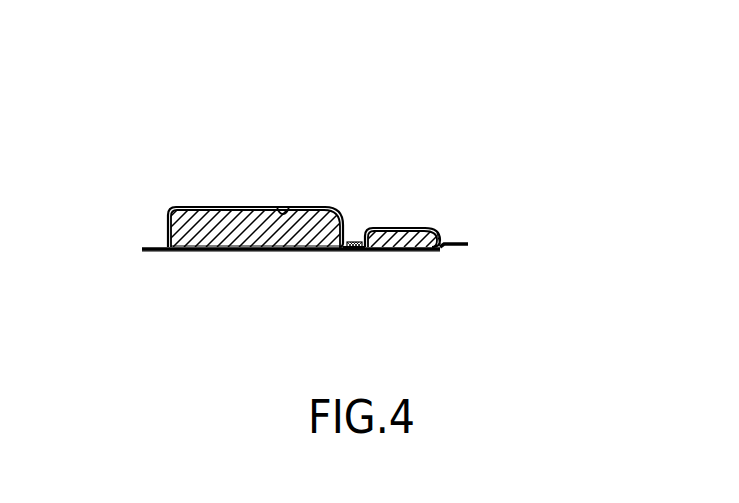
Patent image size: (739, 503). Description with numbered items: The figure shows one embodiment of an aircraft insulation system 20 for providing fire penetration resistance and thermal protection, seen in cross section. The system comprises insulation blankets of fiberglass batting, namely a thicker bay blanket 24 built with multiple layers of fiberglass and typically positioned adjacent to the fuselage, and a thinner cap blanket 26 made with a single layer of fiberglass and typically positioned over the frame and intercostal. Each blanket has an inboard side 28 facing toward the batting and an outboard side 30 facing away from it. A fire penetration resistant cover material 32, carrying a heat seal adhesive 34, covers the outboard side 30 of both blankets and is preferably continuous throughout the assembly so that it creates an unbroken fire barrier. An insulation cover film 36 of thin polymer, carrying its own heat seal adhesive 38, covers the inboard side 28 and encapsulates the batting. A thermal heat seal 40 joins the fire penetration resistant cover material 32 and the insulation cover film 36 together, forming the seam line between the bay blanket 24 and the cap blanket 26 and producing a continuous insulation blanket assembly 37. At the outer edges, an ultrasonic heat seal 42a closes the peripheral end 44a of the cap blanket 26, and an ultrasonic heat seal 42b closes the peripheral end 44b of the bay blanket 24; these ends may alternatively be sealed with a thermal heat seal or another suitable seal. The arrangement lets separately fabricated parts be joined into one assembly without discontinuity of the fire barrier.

The aircraft insulation system 20 is at (518, 94).
The bay blanket 24 is at (203, 216).
The cap blanket 26 is at (440, 229).
The inboard side 28 is at (283, 210).
The outboard side 30 is at (308, 252).
The fire penetration resistant cover material 32 is at (222, 251).
The heat seal adhesive 34 is at (262, 243).
The insulation cover film 36 is at (398, 230).
The insulation blanket assembly 37 is at (355, 268).
The heat seal adhesive 38 is at (347, 243).
The thermal heat seal 40 is at (372, 250).
The ultrasonic heat seal 42a is at (468, 245).
The ultrasonic heat seal 42b is at (142, 250).
The peripheral end 44a is at (440, 240).
The peripheral end 44b is at (165, 247).